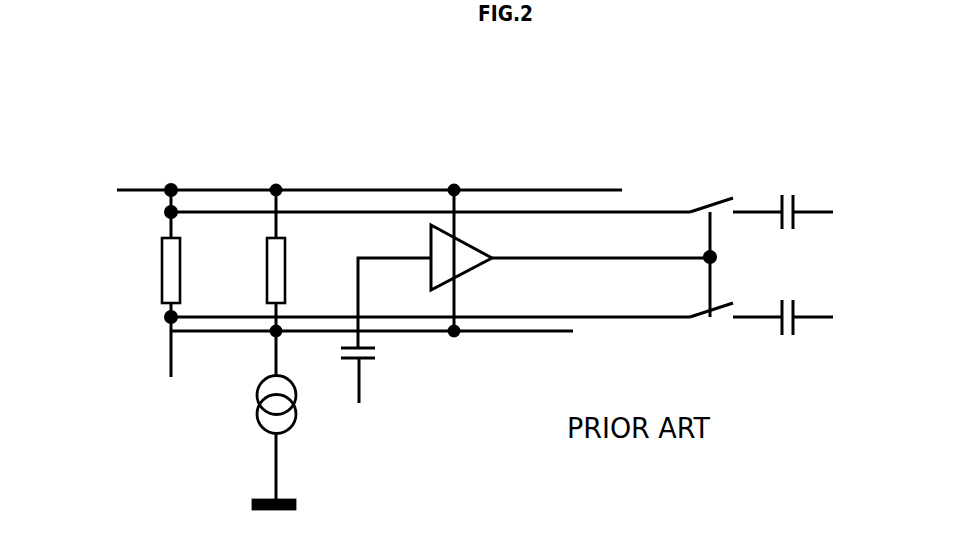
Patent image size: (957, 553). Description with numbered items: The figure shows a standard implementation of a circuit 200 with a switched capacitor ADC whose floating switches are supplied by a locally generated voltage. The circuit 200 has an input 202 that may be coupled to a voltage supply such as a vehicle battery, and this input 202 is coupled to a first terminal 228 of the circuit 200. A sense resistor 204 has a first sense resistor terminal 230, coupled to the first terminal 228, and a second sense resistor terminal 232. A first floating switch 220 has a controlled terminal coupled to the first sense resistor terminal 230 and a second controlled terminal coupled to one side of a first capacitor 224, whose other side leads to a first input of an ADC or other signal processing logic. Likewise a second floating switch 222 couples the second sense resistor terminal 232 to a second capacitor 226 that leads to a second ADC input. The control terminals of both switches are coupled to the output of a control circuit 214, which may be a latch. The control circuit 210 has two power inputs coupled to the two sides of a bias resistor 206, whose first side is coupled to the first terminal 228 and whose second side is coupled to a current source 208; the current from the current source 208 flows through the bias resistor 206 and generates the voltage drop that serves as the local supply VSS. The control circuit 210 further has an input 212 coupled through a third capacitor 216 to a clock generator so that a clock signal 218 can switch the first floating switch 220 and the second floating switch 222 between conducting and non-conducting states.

The circuit 200 is at (733, 91).
The input 202 is at (119, 188).
The sense resistor 204 is at (160, 271).
The bias resistor 206 is at (266, 272).
The current source 208 is at (252, 420).
The control circuit 210 is at (430, 242).
The input 212 is at (428, 263).
The control circuit 214 is at (490, 265).
The third capacitor 216 is at (370, 367).
The clock signal 218 is at (360, 408).
The first floating switch 220 is at (713, 193).
The second floating switch 222 is at (720, 320).
The first capacitor 224 is at (788, 195).
The second capacitor 226 is at (787, 338).
The first terminal 228 is at (174, 186).
The first sense resistor terminal 230 is at (164, 212).
The second sense resistor terminal 232 is at (164, 319).